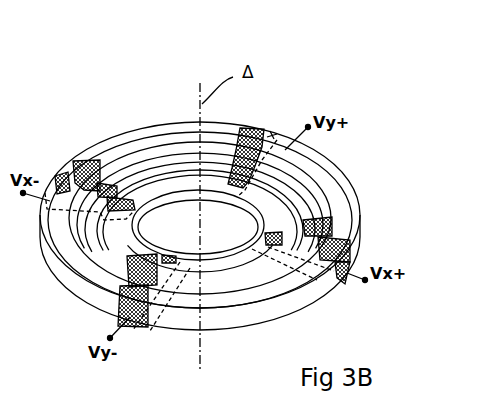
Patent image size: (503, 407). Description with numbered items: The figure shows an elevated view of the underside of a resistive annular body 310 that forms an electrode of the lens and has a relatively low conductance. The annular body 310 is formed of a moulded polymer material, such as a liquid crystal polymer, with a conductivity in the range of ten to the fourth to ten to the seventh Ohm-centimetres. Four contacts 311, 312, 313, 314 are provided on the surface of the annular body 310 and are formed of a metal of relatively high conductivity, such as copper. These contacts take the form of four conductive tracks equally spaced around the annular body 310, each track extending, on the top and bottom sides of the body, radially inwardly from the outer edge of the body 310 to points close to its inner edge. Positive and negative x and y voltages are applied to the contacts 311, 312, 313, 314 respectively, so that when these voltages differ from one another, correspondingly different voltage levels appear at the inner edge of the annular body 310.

The resistive annular body 310 is at (134, 137).
The contact 311 is at (354, 244).
The contact 312 is at (108, 304).
The contact 313 is at (57, 186).
The contact 314 is at (263, 127).